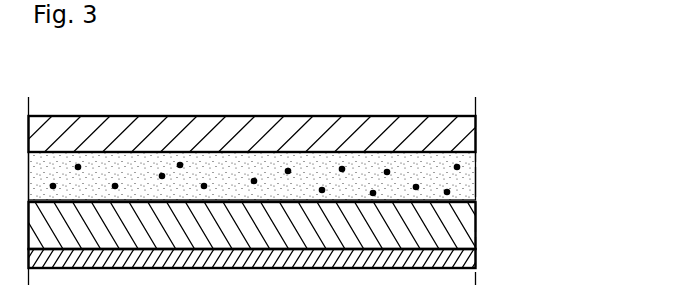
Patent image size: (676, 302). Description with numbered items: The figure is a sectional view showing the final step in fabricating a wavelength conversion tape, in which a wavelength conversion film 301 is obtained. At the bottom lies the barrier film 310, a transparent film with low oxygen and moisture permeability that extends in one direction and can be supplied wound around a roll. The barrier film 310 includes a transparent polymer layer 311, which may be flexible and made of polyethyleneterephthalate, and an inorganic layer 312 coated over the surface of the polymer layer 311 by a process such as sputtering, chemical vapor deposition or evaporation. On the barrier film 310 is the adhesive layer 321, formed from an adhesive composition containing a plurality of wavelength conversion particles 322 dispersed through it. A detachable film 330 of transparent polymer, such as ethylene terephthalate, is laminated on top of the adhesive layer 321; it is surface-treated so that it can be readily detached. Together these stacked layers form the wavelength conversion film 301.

The wavelength conversion film 301 is at (77, 61).
The detachable film 330 is at (472, 133).
The wavelength conversion particles 322 is at (458, 167).
The adhesive layer 321 is at (470, 185).
The polymer layer 311 is at (470, 228).
The inorganic layer 312 is at (472, 260).
The barrier film 310 is at (548, 210).